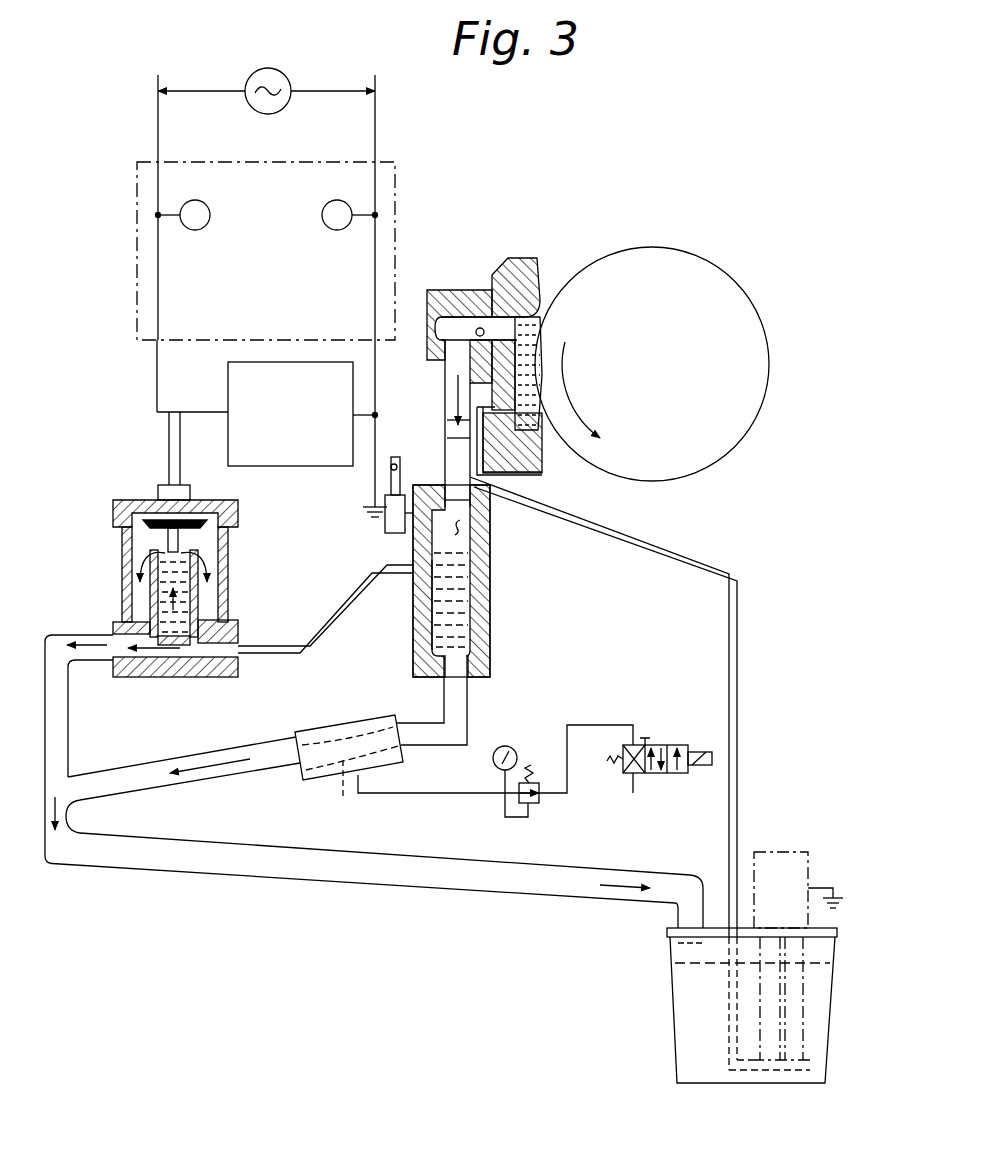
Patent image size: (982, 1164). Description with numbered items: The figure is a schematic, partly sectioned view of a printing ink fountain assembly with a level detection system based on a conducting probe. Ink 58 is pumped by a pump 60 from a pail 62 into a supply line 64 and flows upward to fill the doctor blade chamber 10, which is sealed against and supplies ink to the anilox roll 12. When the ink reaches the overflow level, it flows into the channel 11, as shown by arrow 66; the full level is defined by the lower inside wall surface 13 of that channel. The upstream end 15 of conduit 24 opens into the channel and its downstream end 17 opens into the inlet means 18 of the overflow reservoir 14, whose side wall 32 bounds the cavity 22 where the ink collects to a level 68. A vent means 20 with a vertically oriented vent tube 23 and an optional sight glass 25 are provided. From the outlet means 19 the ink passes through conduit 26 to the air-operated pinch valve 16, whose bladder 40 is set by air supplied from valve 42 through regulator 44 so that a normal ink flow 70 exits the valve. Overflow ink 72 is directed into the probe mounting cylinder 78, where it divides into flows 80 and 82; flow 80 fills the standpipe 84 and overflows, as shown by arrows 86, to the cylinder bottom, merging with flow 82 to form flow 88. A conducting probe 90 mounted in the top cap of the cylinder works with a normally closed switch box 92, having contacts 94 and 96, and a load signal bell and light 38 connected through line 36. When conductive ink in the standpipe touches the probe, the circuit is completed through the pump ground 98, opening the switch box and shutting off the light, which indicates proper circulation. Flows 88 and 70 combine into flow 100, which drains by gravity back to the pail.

The doctor blade chamber 10 is at (518, 258).
The channel 11 is at (462, 290).
The anilox metering roll 12 is at (703, 257).
The lower inside wall surface 13 is at (452, 372).
The overflow reservoir 14 is at (500, 604).
The upstream end 15 is at (440, 360).
The pinch valve 16 is at (350, 718).
The downstream end 17 is at (530, 472).
The inlet means 18 is at (458, 495).
The outlet means 19 is at (460, 673).
The vent means 20 is at (387, 540).
The cavity 22 is at (465, 530).
The vent tube 23 is at (447, 438).
The conduit 24 is at (438, 456).
The sight glass 25 is at (392, 455).
The conduit 26 is at (440, 748).
The side wall 32 is at (413, 625).
The line 36 is at (157, 378).
The load signal bell and light 38 is at (308, 466).
The pinch valve bladder 40 is at (335, 794).
The valve 42 is at (670, 745).
The regulator 44 is at (540, 805).
The ink 58 is at (820, 960).
The pump 60 is at (777, 852).
The pail 62 is at (675, 1010).
The supply line 64 is at (740, 735).
The arrow 66 is at (447, 420).
The level 68 is at (470, 558).
The normal ink flow 70 is at (215, 755).
The overflow ink 72 is at (315, 622).
The probe mounting cylinder 78 is at (108, 500).
The flow 80 is at (185, 603).
The flow 82 is at (160, 677).
The standpipe 84 is at (150, 600).
The overflow arrows 86 is at (140, 555).
The flow 88 is at (97, 672).
The conducting probe 90 is at (190, 535).
The switch box 92 is at (137, 282).
The contact 94 is at (200, 230).
The contact 96 is at (338, 230).
The pump ground 98 is at (368, 478).
The flow 100 is at (70, 813).